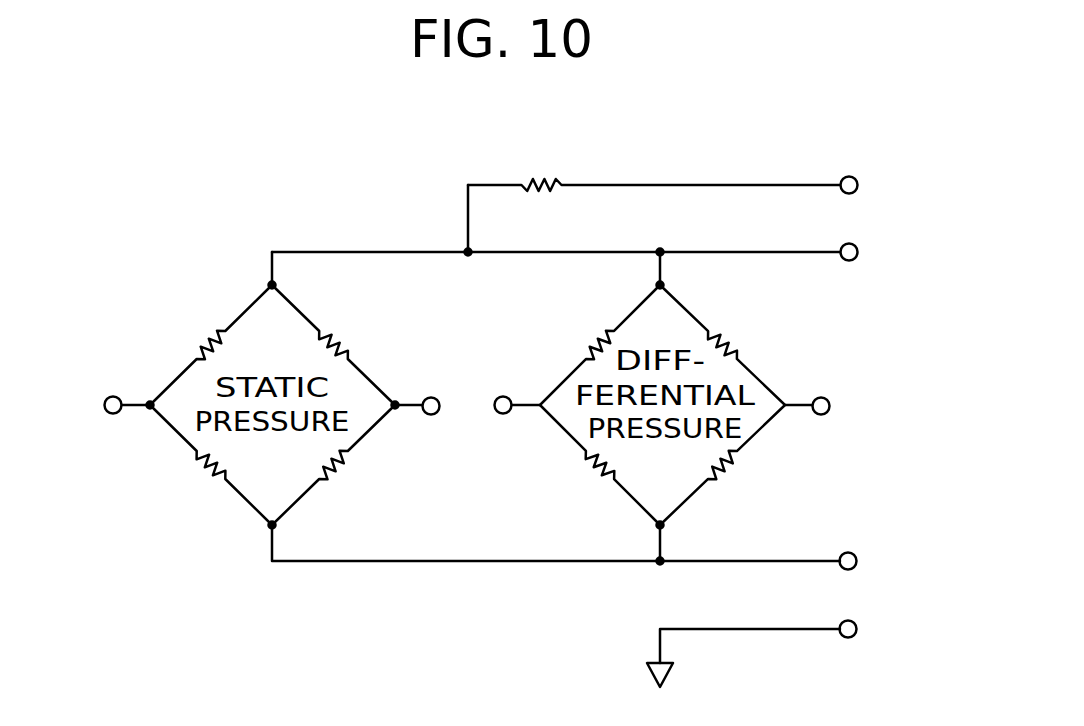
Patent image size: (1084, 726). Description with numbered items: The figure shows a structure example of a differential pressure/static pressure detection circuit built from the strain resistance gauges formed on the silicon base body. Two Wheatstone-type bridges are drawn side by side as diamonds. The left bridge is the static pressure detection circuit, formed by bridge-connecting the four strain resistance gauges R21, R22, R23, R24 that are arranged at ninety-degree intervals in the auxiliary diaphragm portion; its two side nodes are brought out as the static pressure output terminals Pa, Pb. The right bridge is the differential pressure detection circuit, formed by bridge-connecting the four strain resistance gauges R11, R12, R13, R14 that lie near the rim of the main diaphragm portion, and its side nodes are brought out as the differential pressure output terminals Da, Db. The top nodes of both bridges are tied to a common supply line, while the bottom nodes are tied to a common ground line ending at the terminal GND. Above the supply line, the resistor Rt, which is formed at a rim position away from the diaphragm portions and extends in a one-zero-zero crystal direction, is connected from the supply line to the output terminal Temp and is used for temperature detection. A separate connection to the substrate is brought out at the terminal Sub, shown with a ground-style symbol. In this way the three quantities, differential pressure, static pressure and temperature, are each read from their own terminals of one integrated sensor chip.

The resistor for temperature detection Rt is at (654, 167).
The strain resistance gauge for differential pressure detection R11 is at (600, 345).
The strain resistance gauge for differential pressure detection R12 is at (722, 345).
The strain resistance gauge for differential pressure detection R13 is at (722, 465).
The strain resistance gauge for differential pressure detection R14 is at (600, 465).
The strain resistance gauge for static pressure detection R21 is at (211, 345).
The strain resistance gauge for static pressure detection R22 is at (333, 345).
The strain resistance gauge for static pressure detection R23 is at (333, 465).
The strain resistance gauge for static pressure detection R24 is at (211, 465).
The static pressure output terminal Pa is at (105, 407).
The static pressure output terminal Pb is at (422, 390).
The differential pressure output terminal Da is at (515, 424).
The differential pressure output terminal Db is at (831, 406).
The temperature output terminal Temp is at (890, 185).
The ground terminal GND is at (883, 561).
The substrate terminal Sub is at (782, 650).